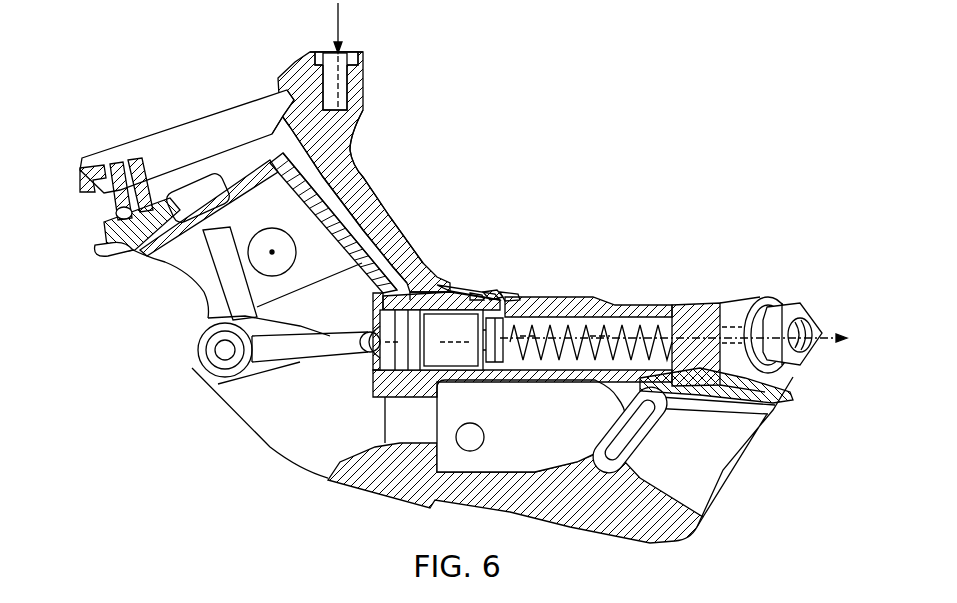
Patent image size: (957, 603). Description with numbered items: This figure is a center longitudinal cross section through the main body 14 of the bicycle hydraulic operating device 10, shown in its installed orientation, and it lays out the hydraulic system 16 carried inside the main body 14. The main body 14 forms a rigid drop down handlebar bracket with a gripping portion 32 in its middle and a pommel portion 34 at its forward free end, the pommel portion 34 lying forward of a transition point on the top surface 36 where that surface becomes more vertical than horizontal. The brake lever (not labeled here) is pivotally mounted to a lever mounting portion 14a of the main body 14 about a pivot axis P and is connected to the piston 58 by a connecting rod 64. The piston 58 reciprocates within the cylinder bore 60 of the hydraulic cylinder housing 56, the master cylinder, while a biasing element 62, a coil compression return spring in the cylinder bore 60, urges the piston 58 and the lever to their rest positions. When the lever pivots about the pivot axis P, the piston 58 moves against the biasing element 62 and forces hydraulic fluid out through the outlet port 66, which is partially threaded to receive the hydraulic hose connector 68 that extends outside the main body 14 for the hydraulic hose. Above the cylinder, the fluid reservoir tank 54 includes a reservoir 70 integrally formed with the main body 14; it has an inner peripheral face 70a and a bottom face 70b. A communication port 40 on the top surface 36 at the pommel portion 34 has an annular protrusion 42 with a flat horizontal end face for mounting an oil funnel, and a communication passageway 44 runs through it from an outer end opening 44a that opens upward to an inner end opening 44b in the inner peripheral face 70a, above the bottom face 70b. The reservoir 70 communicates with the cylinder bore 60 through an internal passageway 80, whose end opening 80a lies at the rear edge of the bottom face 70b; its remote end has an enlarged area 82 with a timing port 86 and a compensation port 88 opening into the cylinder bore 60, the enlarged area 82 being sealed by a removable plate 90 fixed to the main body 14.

The bicycle hydraulic operating device 10 is at (493, 223).
The main body 14 is at (561, 536).
The lever mounting portion 14a is at (213, 273).
The hydraulic system 16 is at (339, 152).
The gripping portion 32 is at (571, 262).
The pommel portion 34 is at (370, 136).
The top surface 36 is at (366, 187).
The communication port 40 is at (313, 40).
The annular protrusion 42 is at (358, 92).
The communication passageway 44 is at (345, 78).
The outer end opening 44a is at (357, 53).
The inner end opening 44b is at (272, 132).
The fluid reservoir tank 54 is at (187, 166).
The hydraulic cylinder housing 56 is at (437, 248).
The piston 58 is at (451, 350).
The cylinder bore 60 is at (525, 367).
The biasing element 62 is at (612, 350).
The connecting rod 64 is at (333, 345).
The outlet port 66 is at (722, 323).
The hydraulic hose connector 68 is at (781, 305).
The reservoir 70 is at (158, 126).
The inner peripheral face 70a is at (262, 112).
The bottom face 70b is at (120, 248).
The internal passageway 80 is at (357, 232).
The end opening 80a is at (256, 188).
The enlarged area 82 is at (479, 265).
The timing port 86 is at (512, 297).
The compensation port 88 is at (489, 296).
The removable plate 90 is at (458, 283).
The pivot axis P is at (276, 254).